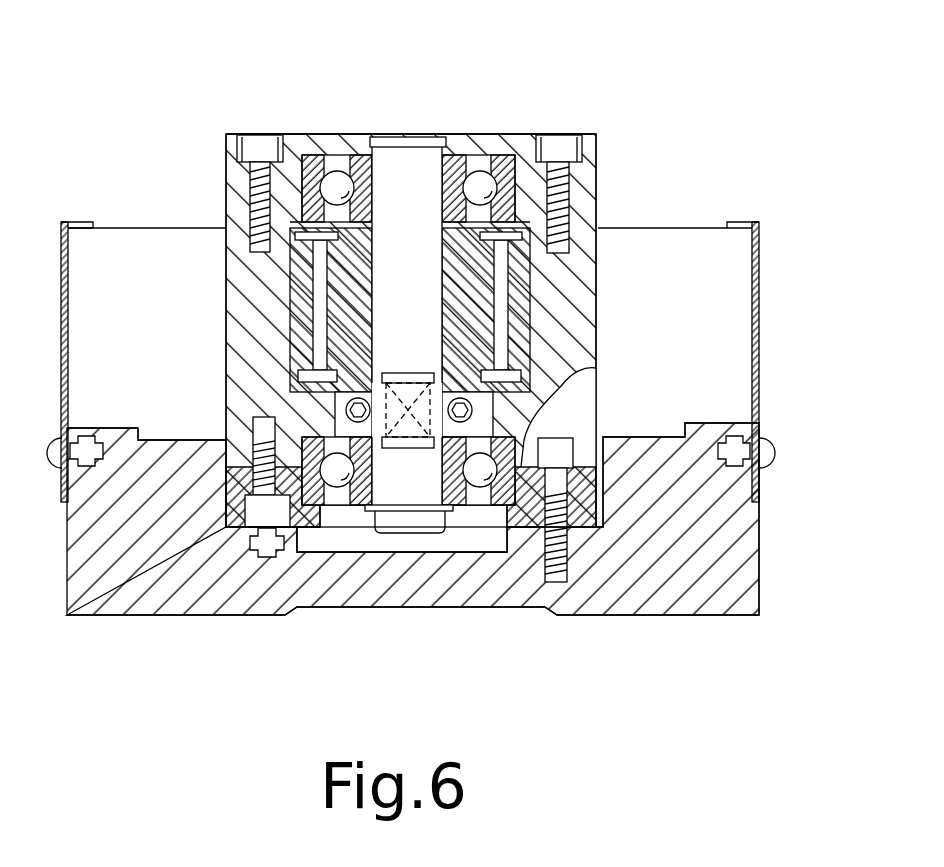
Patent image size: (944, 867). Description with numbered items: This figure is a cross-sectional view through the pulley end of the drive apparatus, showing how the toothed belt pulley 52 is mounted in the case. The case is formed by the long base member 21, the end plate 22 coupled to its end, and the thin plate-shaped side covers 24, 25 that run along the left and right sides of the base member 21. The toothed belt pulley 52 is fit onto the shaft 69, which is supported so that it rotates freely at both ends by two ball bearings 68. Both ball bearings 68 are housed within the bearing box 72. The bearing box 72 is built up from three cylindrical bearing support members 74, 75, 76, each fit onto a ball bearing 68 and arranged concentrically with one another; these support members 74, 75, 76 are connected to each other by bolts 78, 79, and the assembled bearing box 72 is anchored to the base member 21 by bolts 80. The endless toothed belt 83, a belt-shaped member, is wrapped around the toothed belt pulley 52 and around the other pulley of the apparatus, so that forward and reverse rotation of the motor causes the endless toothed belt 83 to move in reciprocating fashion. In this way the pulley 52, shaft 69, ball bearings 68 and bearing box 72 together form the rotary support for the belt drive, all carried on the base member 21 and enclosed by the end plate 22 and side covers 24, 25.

The base member 21 is at (158, 598).
The end plate 22 is at (722, 322).
The side cover 24 is at (757, 250).
The side cover 25 is at (75, 222).
The toothed belt pulley 52 is at (350, 273).
The ball bearings 68 is at (322, 152).
The shaft 69 is at (417, 165).
The bearing box 72 is at (600, 212).
The bearing support member 74 is at (592, 205).
The bearing support member 75 is at (580, 264).
The bearing support member 76 is at (510, 525).
The bolts 78 is at (262, 150).
The bolts 79 is at (272, 512).
The bolts 80 is at (556, 592).
The endless toothed belt 83 is at (312, 318).